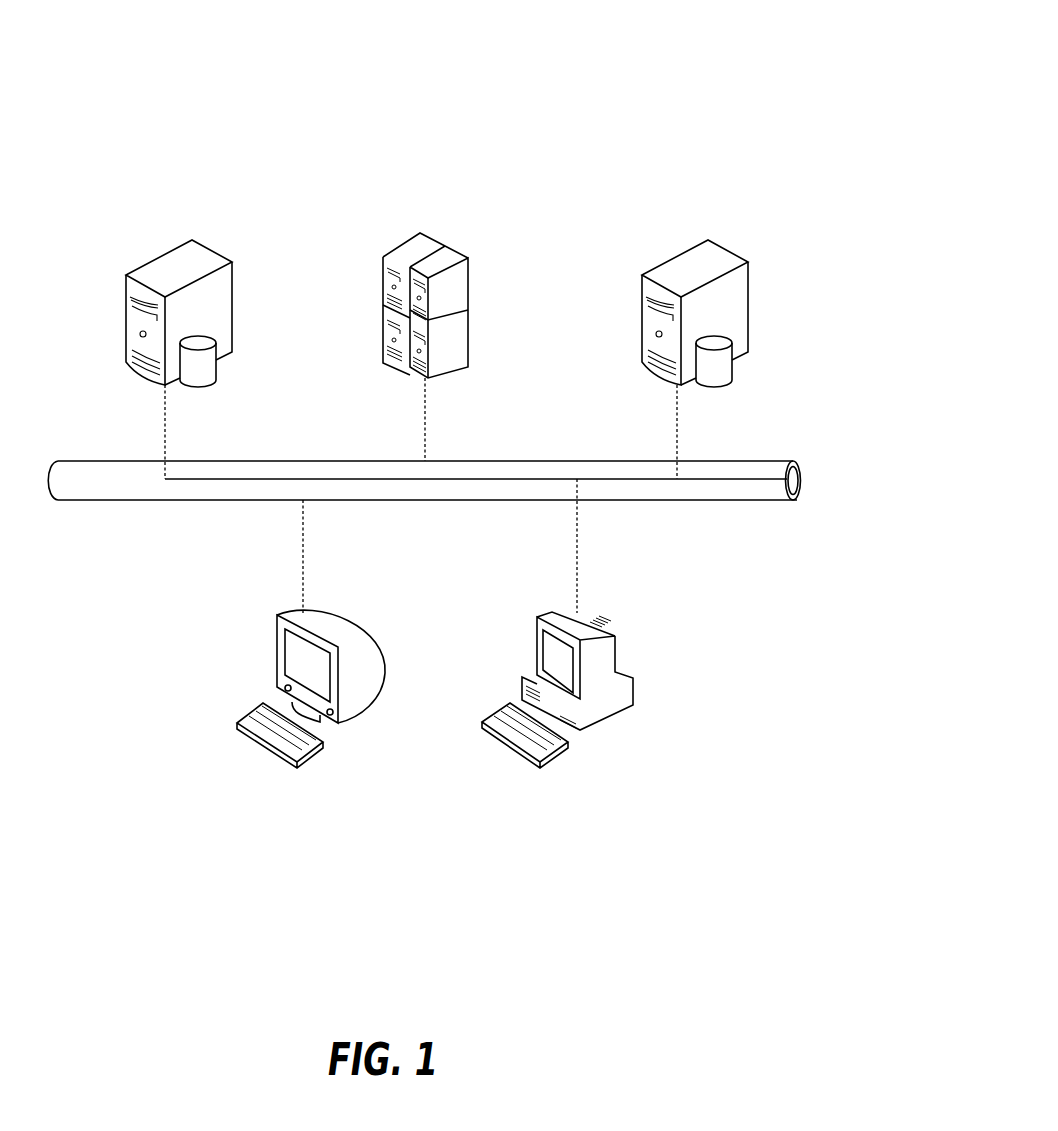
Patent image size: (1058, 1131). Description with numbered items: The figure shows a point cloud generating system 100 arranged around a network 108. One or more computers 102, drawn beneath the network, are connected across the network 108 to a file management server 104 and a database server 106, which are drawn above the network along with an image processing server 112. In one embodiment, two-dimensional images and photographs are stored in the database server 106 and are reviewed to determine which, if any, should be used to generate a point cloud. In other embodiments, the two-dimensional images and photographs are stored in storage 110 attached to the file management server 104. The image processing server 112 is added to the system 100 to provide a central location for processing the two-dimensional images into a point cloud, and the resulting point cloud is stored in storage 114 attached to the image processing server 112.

The point cloud generating system 100 is at (603, 105).
The computers 102 is at (335, 727).
The file management server 104 is at (173, 270).
The database server 106 is at (427, 237).
The network 108 is at (765, 500).
The storage 110 is at (198, 368).
The image processing server 112 is at (688, 272).
The storage 114 is at (715, 370).